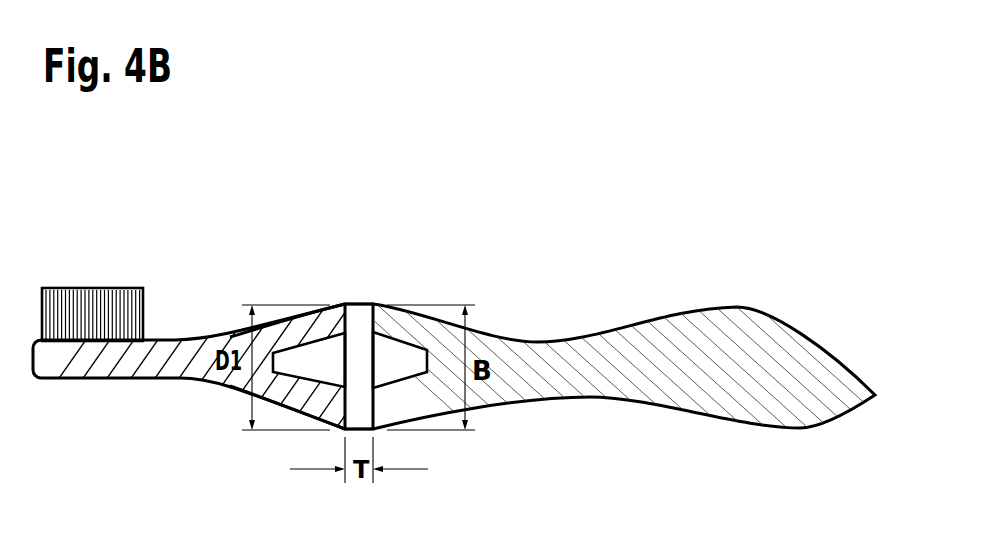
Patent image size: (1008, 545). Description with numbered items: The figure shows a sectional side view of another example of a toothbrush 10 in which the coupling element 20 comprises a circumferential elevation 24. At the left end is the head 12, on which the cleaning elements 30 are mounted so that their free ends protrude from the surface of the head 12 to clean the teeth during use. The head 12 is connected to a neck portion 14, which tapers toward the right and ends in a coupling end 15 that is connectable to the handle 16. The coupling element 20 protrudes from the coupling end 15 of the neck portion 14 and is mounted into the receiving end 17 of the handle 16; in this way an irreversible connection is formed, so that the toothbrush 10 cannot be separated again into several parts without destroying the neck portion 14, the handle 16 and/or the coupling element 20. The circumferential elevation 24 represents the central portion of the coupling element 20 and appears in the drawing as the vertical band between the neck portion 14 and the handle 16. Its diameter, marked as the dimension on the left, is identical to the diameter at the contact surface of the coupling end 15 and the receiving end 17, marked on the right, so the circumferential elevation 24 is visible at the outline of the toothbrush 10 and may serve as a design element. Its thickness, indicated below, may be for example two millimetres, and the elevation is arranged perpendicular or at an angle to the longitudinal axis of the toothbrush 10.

The toothbrush 10 is at (552, 291).
The head 12 is at (78, 358).
The neck portion 14 is at (304, 327).
The coupling end 15 is at (332, 404).
The handle 16 is at (750, 323).
The receiving end 17 is at (383, 325).
The coupling element 20 is at (412, 369).
The circumferential elevation 24 is at (360, 315).
The cleaning elements 30 is at (92, 295).